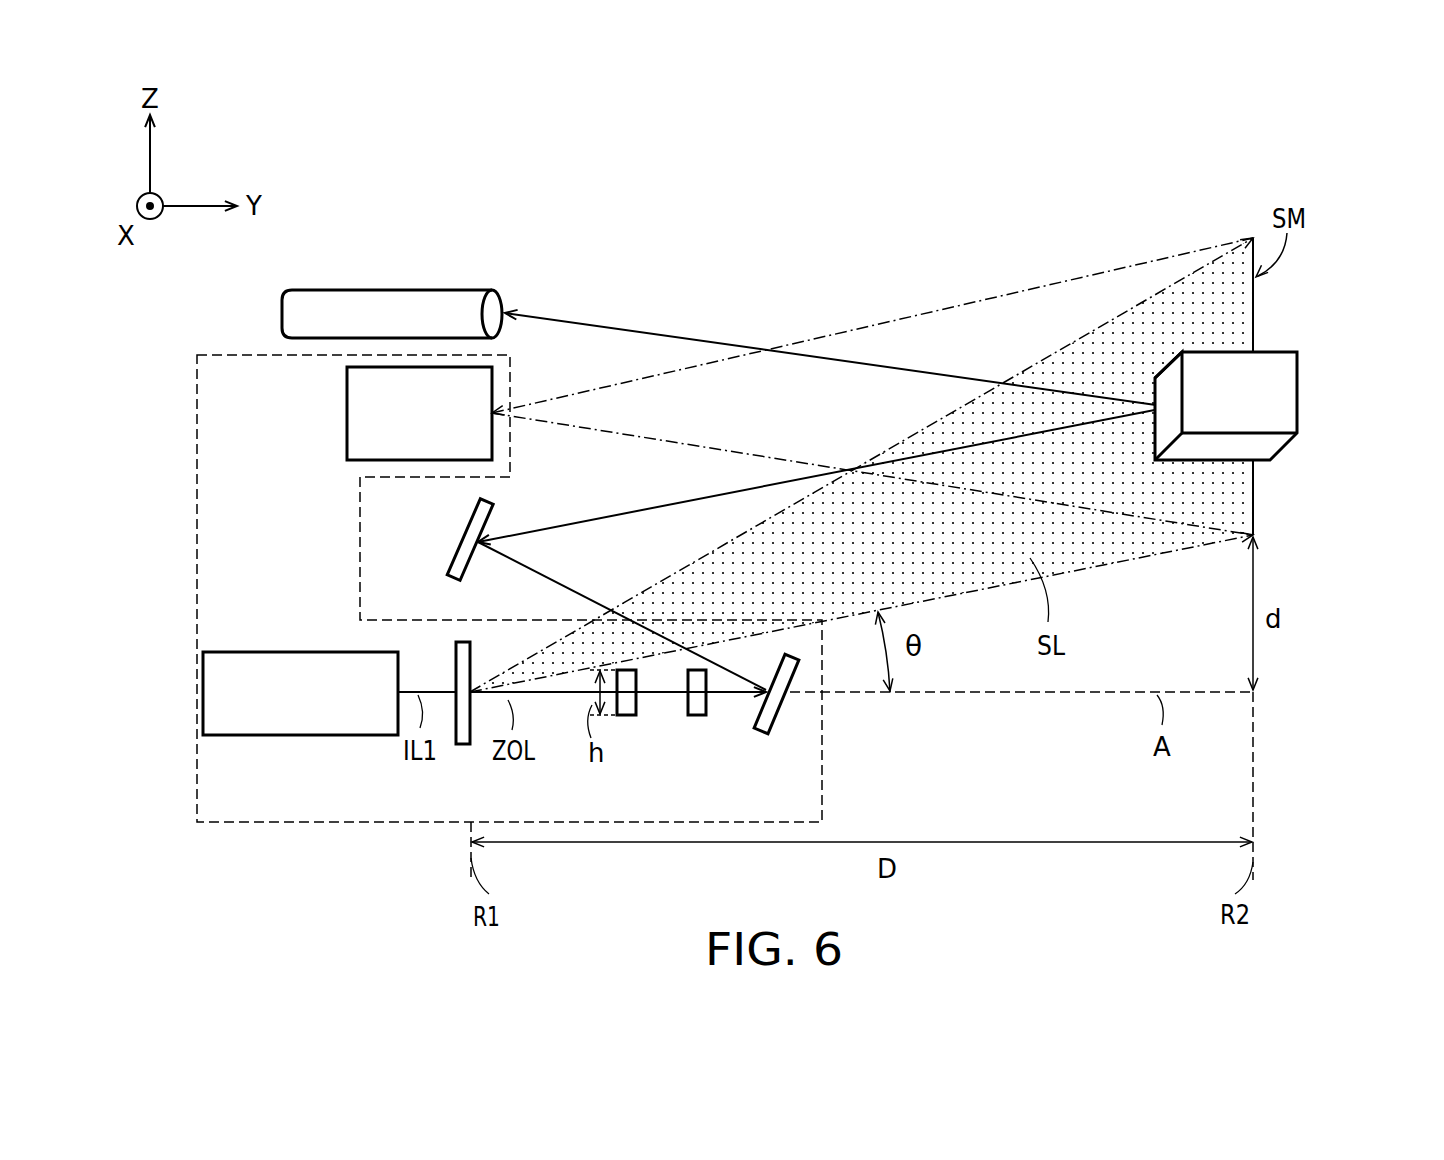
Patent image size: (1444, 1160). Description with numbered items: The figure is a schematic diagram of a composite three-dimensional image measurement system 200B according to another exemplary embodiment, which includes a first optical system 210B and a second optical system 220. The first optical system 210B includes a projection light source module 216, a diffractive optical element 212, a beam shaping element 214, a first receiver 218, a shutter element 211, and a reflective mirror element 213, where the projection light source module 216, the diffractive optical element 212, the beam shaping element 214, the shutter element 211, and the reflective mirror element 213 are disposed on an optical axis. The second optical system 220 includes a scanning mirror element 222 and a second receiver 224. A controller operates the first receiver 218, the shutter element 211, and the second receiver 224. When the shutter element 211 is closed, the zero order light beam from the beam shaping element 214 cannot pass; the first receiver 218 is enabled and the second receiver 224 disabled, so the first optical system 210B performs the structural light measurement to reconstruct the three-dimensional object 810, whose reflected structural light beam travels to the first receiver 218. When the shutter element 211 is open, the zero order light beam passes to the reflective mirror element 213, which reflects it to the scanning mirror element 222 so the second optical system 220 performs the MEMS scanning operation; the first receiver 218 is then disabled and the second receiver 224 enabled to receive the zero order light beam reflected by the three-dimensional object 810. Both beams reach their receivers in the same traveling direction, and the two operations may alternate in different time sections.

The 3D image measurement system 200B is at (1395, 907).
The first optical system 210B is at (197, 560).
The shutter element 211 is at (697, 716).
The diffractive optical element 212 is at (462, 745).
The reflective mirror element 213 is at (775, 736).
The beam shaping element 214 is at (627, 716).
The projection light source module 216 is at (318, 735).
The first receiver 218 is at (347, 410).
The second optical system 220 is at (1361, 127).
The scanning mirror element 222 is at (460, 548).
The second receiver 224 is at (440, 290).
The 3D object 810 is at (1277, 388).